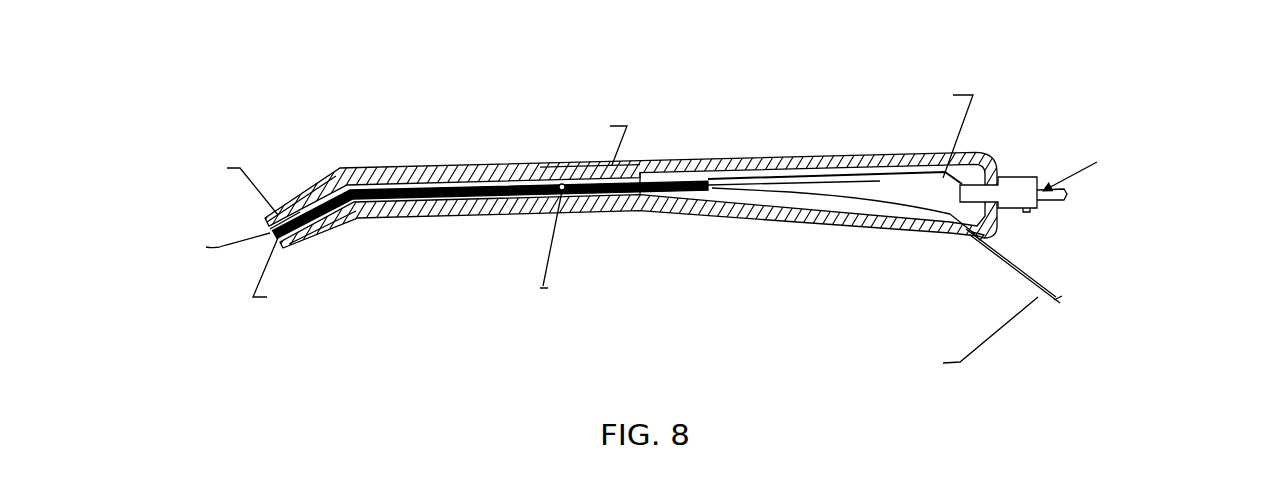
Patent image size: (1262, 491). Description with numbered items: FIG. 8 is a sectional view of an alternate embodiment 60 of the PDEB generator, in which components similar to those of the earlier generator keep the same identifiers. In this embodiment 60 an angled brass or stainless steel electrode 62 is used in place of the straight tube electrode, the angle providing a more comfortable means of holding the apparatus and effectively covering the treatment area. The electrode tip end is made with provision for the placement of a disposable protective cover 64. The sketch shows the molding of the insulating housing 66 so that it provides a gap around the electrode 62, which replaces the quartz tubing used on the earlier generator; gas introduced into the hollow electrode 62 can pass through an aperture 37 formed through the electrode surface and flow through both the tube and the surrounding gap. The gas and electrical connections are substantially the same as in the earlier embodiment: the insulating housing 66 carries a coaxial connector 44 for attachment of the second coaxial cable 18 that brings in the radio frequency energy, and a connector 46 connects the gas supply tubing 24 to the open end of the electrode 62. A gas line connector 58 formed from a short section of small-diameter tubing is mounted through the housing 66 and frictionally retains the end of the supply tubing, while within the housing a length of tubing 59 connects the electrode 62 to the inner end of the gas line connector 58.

The alternate embodiment of the PDEB generator 60 is at (938, 50).
The insulating housing 66 is at (860, 157).
The aperture 37 is at (572, 160).
The disposable protective cover 64 is at (279, 191).
The angled brass or stainless steel electrode 62 is at (418, 200).
The connector 46 is at (870, 178).
The tubing 59 is at (827, 200).
The coaxial connector 44 is at (1014, 177).
The second coaxial cable 18 is at (1053, 206).
The gas line connector 58 is at (970, 238).
The gas supply tubing 24 is at (1033, 275).